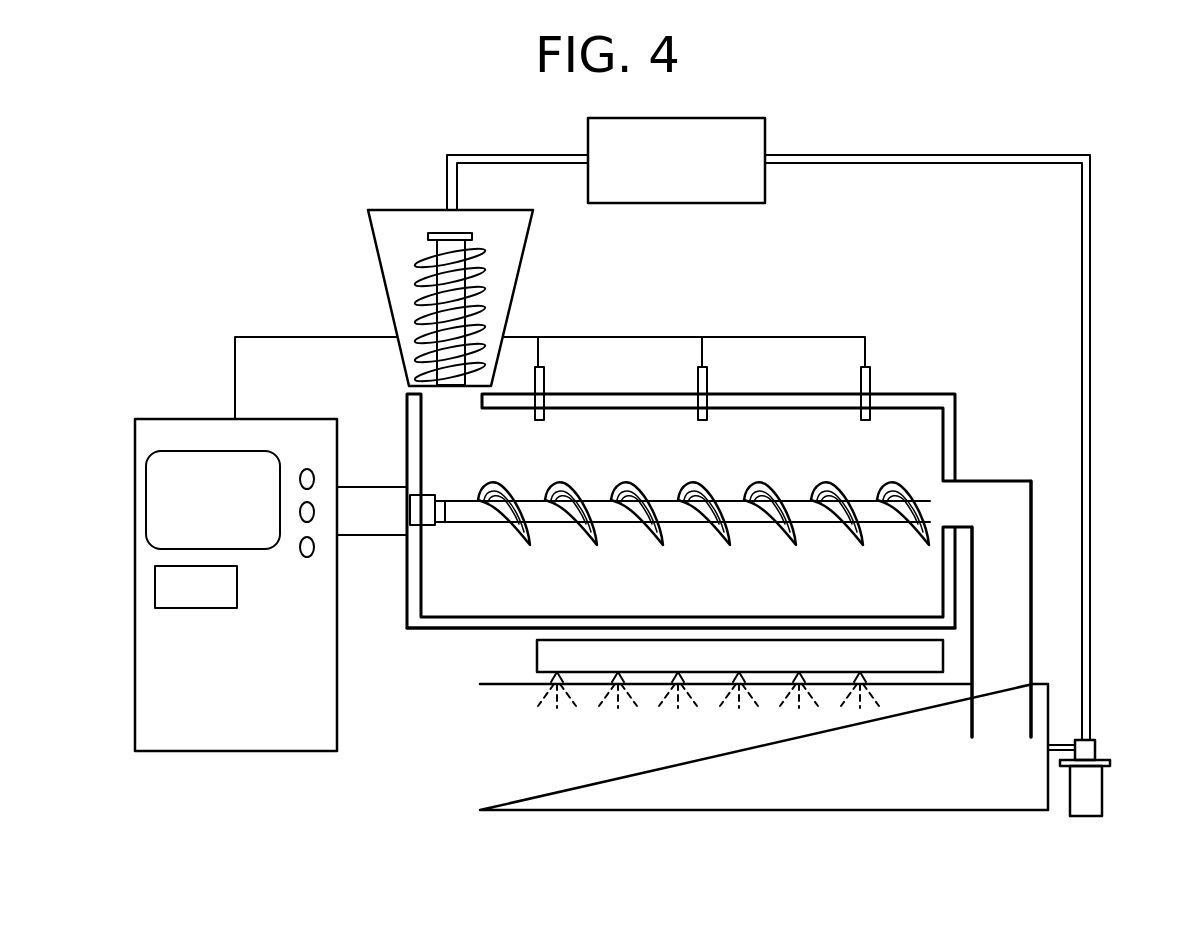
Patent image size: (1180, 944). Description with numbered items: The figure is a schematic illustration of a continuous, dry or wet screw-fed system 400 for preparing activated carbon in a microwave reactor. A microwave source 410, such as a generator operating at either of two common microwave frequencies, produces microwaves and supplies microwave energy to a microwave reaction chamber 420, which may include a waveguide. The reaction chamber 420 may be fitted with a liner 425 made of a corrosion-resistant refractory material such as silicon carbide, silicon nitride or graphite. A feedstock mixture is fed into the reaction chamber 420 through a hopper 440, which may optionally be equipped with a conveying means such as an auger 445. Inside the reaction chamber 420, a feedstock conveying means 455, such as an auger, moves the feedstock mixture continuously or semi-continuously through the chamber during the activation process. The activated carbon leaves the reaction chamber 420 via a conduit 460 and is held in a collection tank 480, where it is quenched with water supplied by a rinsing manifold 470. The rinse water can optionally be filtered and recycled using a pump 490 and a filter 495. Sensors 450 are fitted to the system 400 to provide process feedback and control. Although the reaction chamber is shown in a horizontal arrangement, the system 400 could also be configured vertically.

The system 400 is at (208, 226).
The microwave source 410 is at (150, 699).
The microwave reaction chamber 420 is at (905, 393).
The liner 425 is at (463, 618).
The hopper 440 is at (381, 266).
The auger 445 is at (462, 308).
The sensors 450 is at (860, 380).
The feedstock conveying means 455 is at (752, 512).
The conduit 460 is at (1015, 562).
The rinsing manifold 470 is at (843, 657).
The collection tank 480 is at (546, 812).
The pump 490 is at (1095, 787).
The filter 495 is at (730, 128).